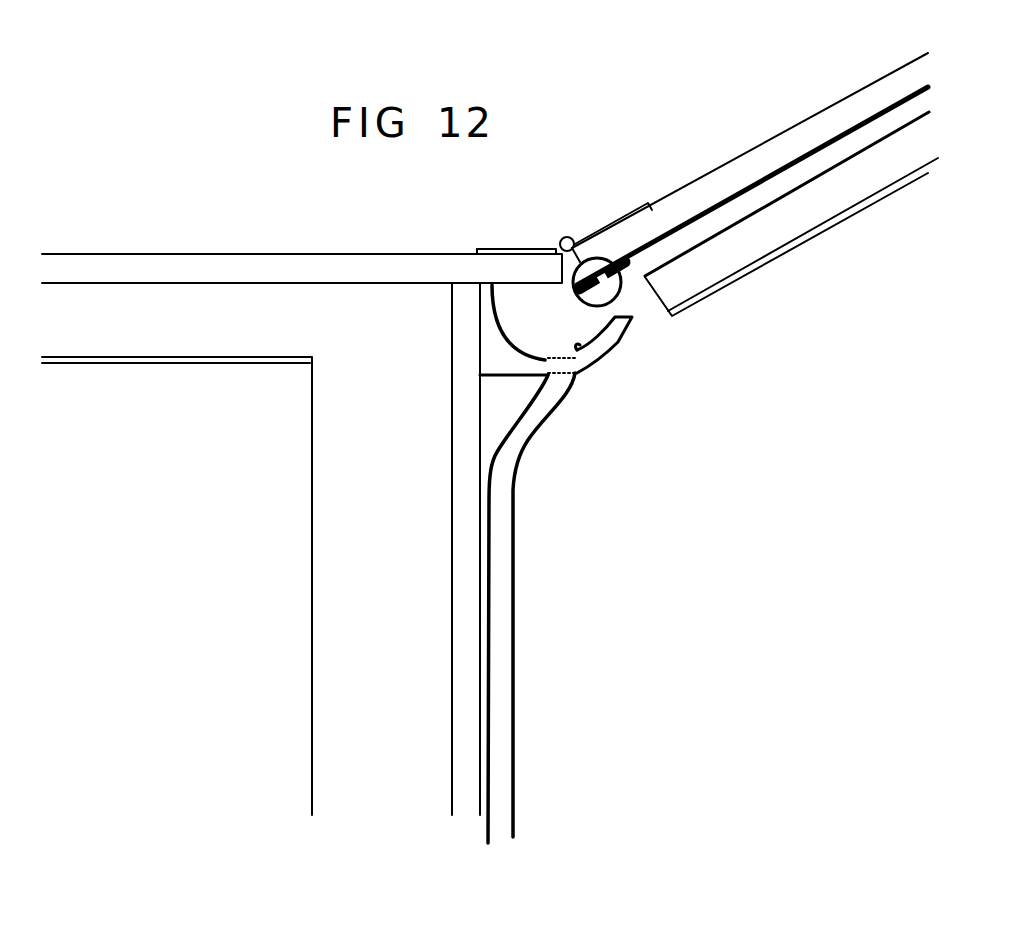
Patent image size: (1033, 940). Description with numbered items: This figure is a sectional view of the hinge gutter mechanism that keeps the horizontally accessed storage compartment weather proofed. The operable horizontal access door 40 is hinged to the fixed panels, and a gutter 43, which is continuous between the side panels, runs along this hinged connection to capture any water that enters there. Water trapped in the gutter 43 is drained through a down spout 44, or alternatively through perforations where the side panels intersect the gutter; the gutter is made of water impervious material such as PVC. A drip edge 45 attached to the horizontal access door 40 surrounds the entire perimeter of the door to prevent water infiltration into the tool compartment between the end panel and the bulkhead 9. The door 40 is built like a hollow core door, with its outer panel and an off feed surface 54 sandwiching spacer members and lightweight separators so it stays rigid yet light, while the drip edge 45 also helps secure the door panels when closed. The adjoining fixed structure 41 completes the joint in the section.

The bulkhead 9 is at (463, 458).
The horizontal access door 40 is at (810, 132).
The horizontal bar 41 is at (183, 268).
The gutter 43 is at (615, 342).
The down spout 44 is at (503, 630).
The drip edge 45 is at (597, 258).
The off feed surface 54 is at (787, 250).